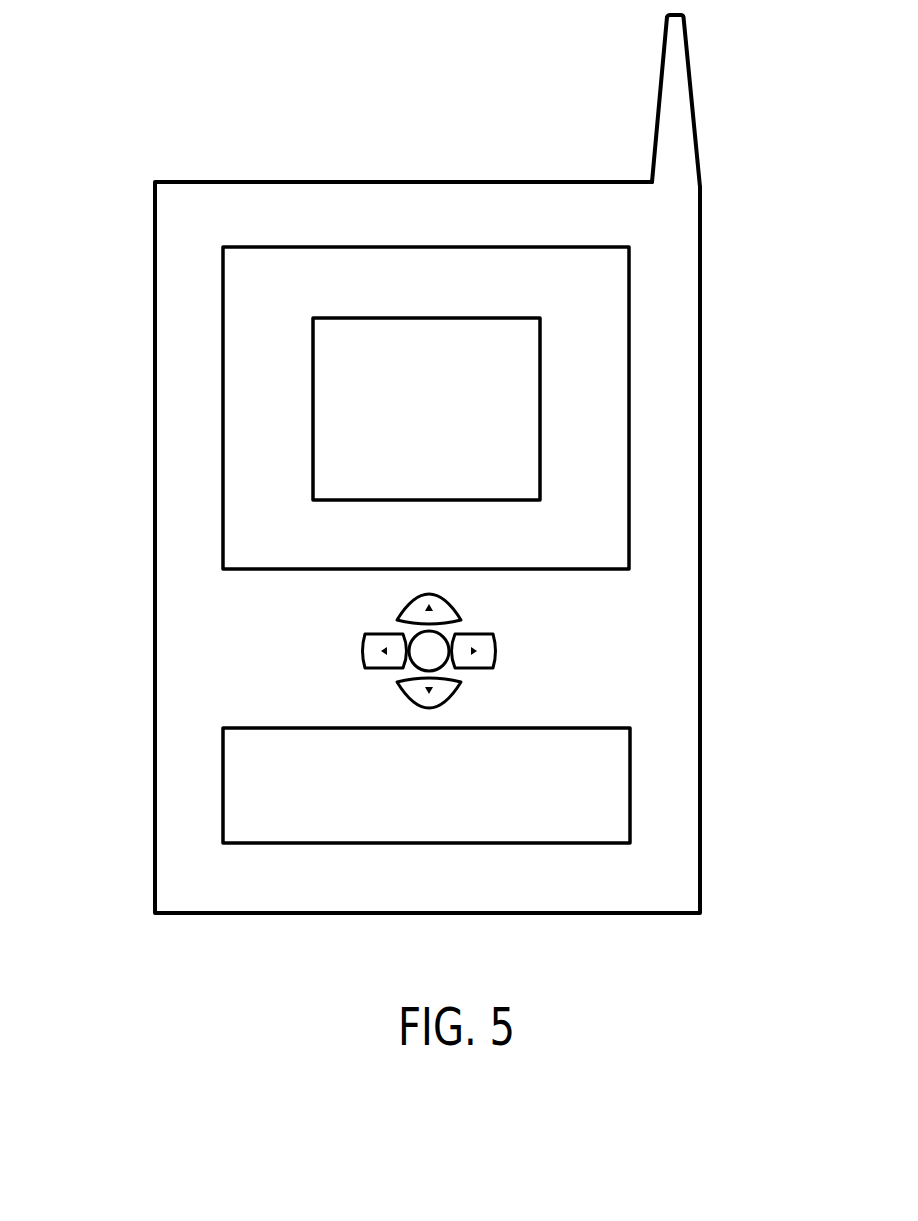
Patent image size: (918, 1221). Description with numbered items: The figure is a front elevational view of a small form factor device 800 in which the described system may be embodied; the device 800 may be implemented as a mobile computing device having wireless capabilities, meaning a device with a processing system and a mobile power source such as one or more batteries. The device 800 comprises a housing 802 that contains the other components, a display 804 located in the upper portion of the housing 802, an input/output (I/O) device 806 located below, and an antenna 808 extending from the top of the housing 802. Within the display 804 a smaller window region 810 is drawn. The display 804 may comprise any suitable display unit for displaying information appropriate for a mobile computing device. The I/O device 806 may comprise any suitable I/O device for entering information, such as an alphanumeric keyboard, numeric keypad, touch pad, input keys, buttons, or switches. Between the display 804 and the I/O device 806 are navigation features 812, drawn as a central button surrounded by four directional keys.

The small form factor device 800 is at (152, 117).
The housing 802 is at (153, 640).
The display 804 is at (629, 307).
The input/output (I/O) device 806 is at (630, 785).
The antenna 808 is at (660, 97).
The display window 810 is at (428, 318).
The navigation features 812 is at (532, 653).